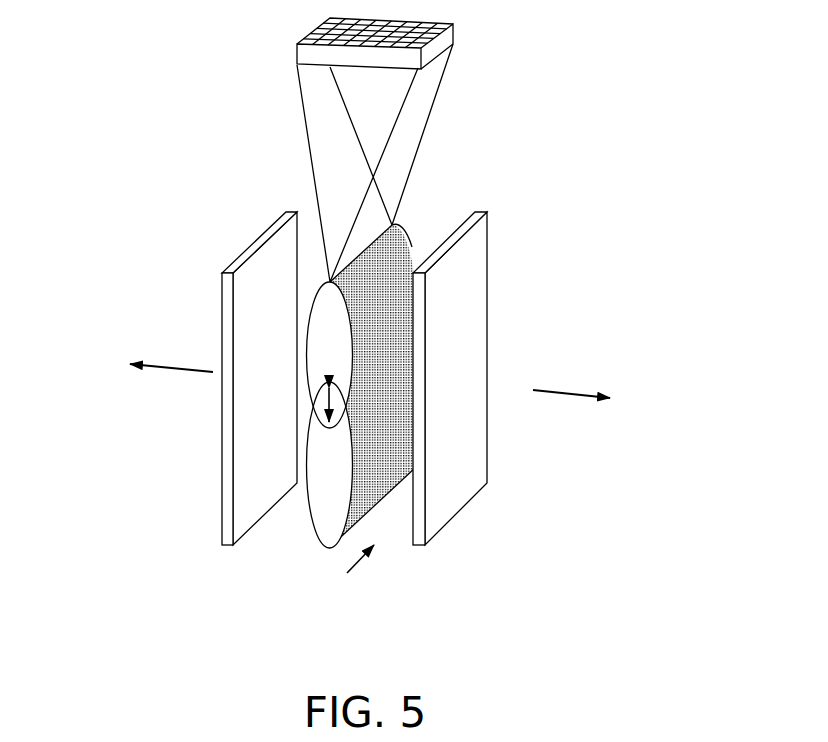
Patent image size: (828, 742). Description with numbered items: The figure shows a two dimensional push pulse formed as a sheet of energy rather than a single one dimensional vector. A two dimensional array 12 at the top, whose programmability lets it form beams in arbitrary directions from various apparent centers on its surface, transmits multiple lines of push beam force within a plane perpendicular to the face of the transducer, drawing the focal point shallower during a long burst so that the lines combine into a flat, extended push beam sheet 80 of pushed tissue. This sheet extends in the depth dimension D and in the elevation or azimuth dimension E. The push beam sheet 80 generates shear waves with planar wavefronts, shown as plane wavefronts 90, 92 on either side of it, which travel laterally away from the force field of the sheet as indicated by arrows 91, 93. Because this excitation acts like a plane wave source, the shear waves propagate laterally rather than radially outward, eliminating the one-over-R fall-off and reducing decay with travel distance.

The two dimensional array 12 is at (295, 45).
The push beam sheet 80 is at (403, 233).
The plane wavefront 90 is at (478, 212).
The arrow 91 is at (570, 392).
The plane wavefront 92 is at (287, 212).
The arrow 93 is at (163, 365).
The depth dimension D is at (326, 418).
The elevation or azimuth dimension E is at (363, 558).